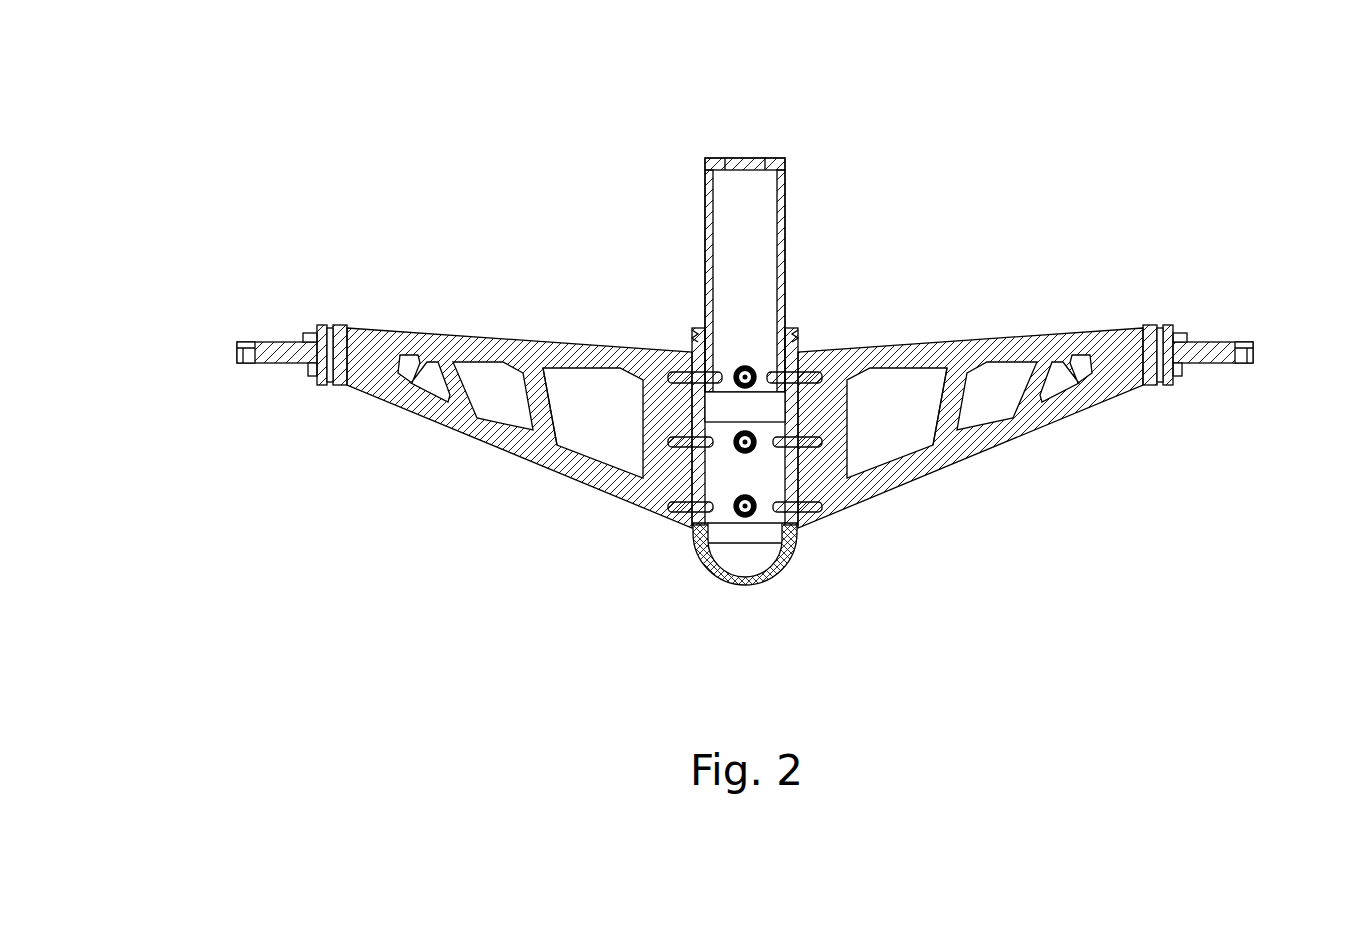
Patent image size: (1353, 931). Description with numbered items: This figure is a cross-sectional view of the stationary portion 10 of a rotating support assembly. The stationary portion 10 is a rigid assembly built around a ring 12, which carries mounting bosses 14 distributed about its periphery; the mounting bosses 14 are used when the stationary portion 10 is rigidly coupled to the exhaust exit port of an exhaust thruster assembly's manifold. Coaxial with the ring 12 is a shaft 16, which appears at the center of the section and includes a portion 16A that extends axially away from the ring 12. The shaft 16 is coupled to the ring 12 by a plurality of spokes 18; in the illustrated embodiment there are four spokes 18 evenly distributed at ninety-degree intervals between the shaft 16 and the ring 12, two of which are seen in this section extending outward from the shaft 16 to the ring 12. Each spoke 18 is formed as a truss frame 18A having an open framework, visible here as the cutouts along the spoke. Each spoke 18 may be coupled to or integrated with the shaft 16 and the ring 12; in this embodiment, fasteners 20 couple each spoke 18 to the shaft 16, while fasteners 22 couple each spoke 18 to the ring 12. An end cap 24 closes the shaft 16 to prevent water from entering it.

The stationary portion 10 is at (683, 147).
The ring 12 is at (235, 355).
The mounting bosses 14 is at (275, 340).
The shaft 16 is at (702, 558).
The portion of shaft 16A is at (785, 190).
The spokes 18 is at (587, 342).
The truss frame 18A is at (537, 402).
The fasteners 20 is at (783, 370).
The fasteners 22 is at (338, 322).
The end cap 24 is at (733, 585).